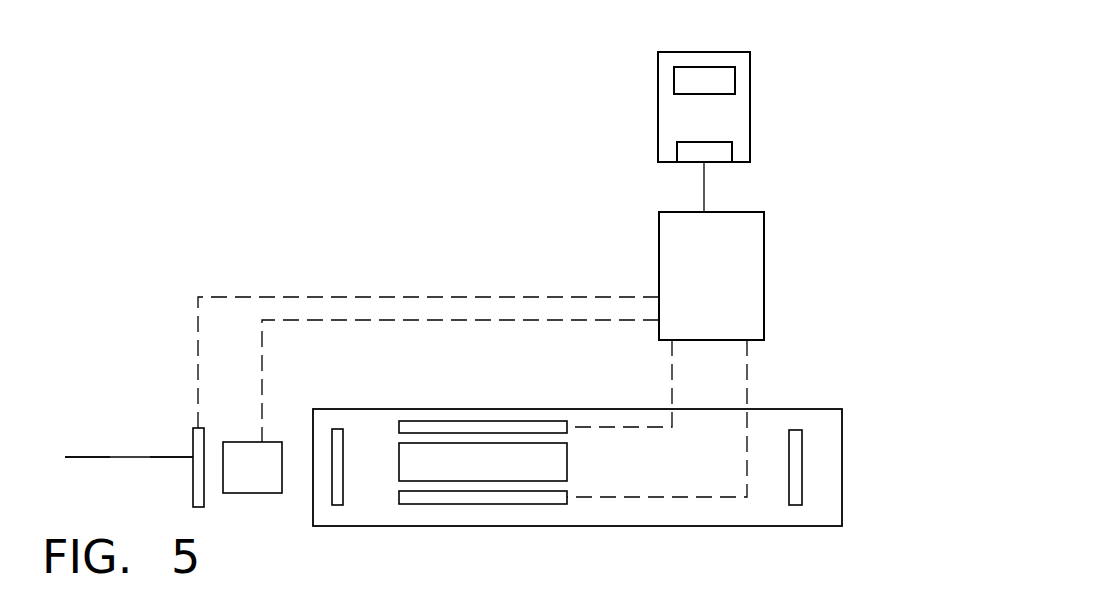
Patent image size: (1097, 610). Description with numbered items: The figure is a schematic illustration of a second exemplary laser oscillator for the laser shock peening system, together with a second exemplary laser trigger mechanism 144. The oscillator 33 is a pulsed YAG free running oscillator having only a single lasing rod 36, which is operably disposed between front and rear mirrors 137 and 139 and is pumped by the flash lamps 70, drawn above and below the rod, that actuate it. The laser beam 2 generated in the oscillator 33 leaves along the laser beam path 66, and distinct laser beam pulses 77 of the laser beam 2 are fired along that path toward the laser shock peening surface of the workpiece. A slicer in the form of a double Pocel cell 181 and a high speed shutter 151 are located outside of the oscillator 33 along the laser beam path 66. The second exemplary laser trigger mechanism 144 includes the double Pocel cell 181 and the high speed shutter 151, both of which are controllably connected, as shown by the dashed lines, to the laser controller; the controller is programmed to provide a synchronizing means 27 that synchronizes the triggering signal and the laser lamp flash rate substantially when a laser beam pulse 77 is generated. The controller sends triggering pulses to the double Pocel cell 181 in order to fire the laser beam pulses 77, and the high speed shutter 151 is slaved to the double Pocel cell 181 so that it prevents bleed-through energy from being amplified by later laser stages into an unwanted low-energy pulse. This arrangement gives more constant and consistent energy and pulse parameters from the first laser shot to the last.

The synchronizing means 27 is at (797, 214).
The second exemplary laser trigger mechanism 144 is at (485, 256).
The laser beam 2 is at (138, 460).
The laser beam path 66 is at (105, 456).
The laser beam pulses 77 is at (172, 455).
The high speed shutter 151 is at (200, 508).
The double Pocel cell 181 is at (273, 479).
The oscillator 33 is at (799, 410).
The front mirror 137 is at (338, 429).
The flash lamps 70 is at (483, 421).
The lasing rod 36 is at (522, 474).
The rear mirror 139 is at (803, 455).